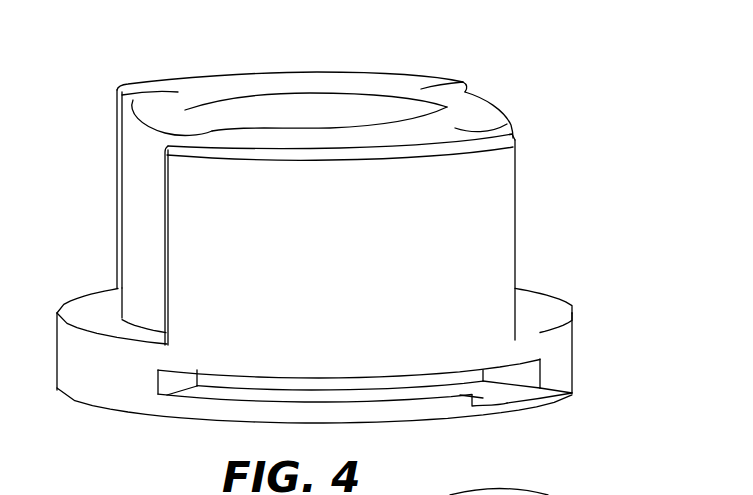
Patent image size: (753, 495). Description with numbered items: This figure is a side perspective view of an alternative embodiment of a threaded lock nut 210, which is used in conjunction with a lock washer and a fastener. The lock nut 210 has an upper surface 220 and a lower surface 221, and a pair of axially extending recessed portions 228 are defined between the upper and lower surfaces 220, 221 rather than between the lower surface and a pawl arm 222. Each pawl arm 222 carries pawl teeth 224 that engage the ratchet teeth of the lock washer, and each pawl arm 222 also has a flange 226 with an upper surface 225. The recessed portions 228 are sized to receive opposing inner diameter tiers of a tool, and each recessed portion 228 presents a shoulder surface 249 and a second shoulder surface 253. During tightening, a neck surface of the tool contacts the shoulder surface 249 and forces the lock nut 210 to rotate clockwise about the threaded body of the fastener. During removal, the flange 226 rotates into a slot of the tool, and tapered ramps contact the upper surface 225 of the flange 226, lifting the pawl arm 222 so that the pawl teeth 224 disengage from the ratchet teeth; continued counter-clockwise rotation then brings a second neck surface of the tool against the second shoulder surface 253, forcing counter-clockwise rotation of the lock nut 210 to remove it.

The lock nut 210 is at (666, 143).
The upper surface 220 is at (107, 408).
The lower surface 221 is at (180, 104).
The pawl arm 222 is at (430, 416).
The pawl teeth 224 is at (487, 430).
The upper surface of flange 225 is at (553, 418).
The flange 226 is at (550, 408).
The axially extending recessed portion 228 is at (58, 112).
The shoulder surface 249 is at (516, 255).
The second shoulder surface 253 is at (167, 242).